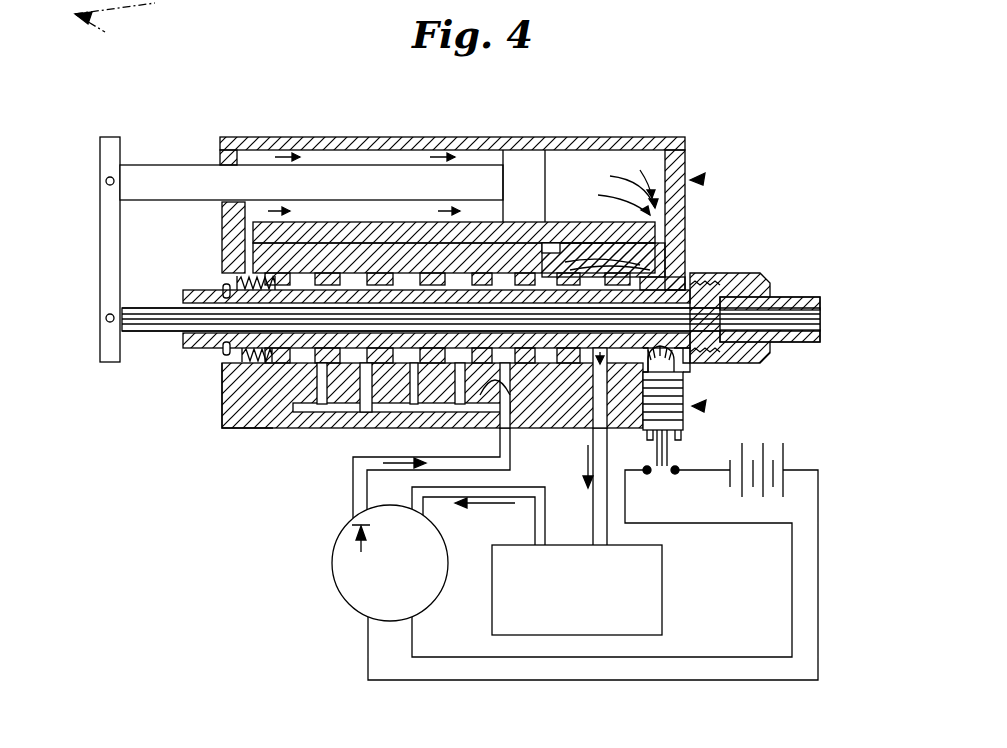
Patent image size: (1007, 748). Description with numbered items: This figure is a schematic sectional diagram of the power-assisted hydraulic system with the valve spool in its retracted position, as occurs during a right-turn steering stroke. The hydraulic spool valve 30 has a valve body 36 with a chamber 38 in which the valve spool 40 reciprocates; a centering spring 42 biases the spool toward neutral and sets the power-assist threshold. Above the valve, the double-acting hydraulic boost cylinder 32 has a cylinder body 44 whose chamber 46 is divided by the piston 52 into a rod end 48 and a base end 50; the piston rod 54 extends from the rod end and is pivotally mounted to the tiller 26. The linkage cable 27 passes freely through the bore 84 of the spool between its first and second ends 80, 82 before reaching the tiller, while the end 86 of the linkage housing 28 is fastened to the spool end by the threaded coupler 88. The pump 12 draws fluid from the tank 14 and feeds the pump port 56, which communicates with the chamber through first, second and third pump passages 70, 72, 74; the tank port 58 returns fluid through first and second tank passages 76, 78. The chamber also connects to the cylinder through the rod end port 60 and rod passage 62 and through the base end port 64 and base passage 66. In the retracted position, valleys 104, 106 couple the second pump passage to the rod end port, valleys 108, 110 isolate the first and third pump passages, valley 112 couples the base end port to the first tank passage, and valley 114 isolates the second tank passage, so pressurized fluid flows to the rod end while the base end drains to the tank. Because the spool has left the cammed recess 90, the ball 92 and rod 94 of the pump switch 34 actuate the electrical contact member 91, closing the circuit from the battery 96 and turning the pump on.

The pump 12 is at (331, 566).
The tank 14 is at (663, 593).
The tiller 26 is at (118, 350).
The cable 27 is at (140, 326).
The housing 28 is at (803, 298).
The hydraulic spool valve 30 is at (221, 429).
The double-acting hydraulic boost cylinder 32 is at (703, 179).
The pump switch 34 is at (700, 407).
The valve body 36 is at (228, 403).
The chamber 38 is at (272, 282).
The valve spool 40 is at (204, 345).
The centering spring 42 is at (237, 281).
The cylinder body 44 is at (680, 168).
The chamber 46 is at (555, 178).
The rod end 48 is at (240, 212).
The base end 50 is at (668, 160).
The piston 52 is at (530, 170).
The piston rod 54 is at (152, 172).
The pump port 56 is at (500, 434).
The tank port 58 is at (608, 488).
The rod end port 60 is at (313, 292).
The rod passage 62 is at (243, 232).
The base end port 64 is at (688, 270).
The base passage 66 is at (688, 246).
The first pump passage 70 is at (526, 385).
The second pump passage 72 is at (366, 432).
The third pump passage 74 is at (312, 408).
The first tank passage 76 is at (584, 442).
The second tank passage 78 is at (404, 452).
The first end 80 is at (692, 352).
The second end 82 is at (185, 297).
The bore 84 is at (217, 332).
The end 86 is at (822, 322).
The threaded coupler 88 is at (760, 275).
The cammed recess 90 is at (678, 358).
The electrical contact member 91 is at (656, 473).
The ball 92 is at (676, 380).
The rod 94 is at (668, 456).
The battery 96 is at (786, 468).
The valley 104 is at (322, 430).
The valley 106 is at (410, 292).
The valley 108 is at (500, 290).
The valley 110 is at (300, 368).
The valley 112 is at (686, 283).
The valley 114 is at (427, 468).